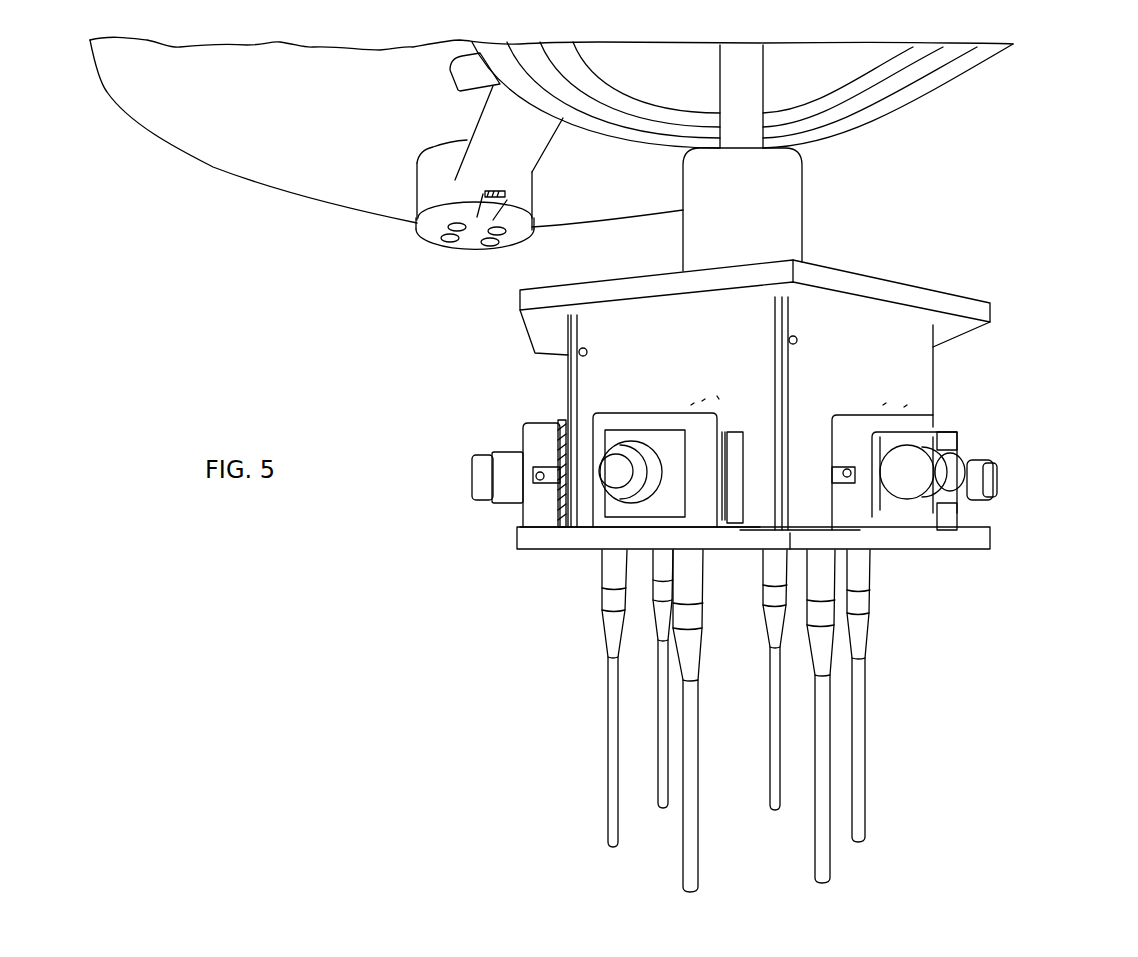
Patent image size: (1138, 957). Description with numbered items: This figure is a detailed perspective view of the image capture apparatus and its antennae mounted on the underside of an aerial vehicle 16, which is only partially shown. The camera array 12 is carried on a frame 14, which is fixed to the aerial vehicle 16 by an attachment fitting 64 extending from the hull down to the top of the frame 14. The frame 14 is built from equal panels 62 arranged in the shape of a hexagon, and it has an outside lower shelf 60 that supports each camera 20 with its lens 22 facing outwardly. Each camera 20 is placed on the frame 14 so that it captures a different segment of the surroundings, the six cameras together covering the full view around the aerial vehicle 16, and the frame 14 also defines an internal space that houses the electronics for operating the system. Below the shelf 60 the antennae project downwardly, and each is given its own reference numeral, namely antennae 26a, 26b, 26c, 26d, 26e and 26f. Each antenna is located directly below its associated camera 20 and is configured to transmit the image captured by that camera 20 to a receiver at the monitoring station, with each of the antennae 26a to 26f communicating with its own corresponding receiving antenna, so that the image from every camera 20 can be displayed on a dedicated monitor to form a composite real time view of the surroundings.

The camera array 12 is at (763, 573).
The frame 14 is at (701, 386).
The aerial vehicle 16 is at (407, 251).
The camera 20 is at (533, 428).
The lens 22 is at (470, 478).
The antenna 26a is at (772, 814).
The antenna 26b is at (831, 873).
The antenna 26c is at (859, 812).
The antenna 26d is at (701, 891).
The antenna 26e is at (668, 762).
The antenna 26f is at (605, 836).
The lower shelf 60 is at (985, 541).
The panel 62 is at (922, 366).
The attachment fitting 64 is at (797, 202).